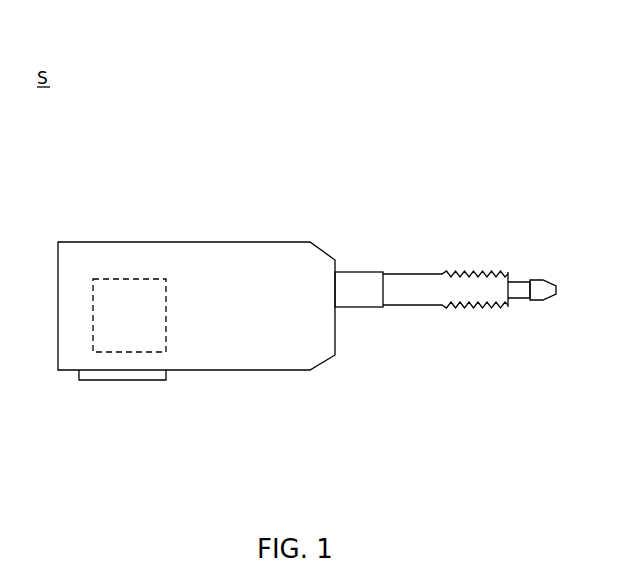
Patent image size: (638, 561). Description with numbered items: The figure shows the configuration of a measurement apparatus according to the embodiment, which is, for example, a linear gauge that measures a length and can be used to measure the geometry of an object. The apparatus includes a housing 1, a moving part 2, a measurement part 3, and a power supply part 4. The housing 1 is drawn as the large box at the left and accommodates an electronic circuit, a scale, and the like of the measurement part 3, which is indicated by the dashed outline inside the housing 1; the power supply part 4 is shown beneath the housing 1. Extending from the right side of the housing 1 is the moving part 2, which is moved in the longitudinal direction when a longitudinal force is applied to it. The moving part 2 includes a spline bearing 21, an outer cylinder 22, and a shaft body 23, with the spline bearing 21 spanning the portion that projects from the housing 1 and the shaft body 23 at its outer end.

The housing 1 is at (240, 278).
The moving part 2 is at (469, 282).
The measurement part 3 is at (131, 297).
The power supply part 4 is at (166, 376).
The spline bearing 21 is at (469, 223).
The outer cylinder 22 is at (420, 290).
The shaft body 23 is at (532, 249).